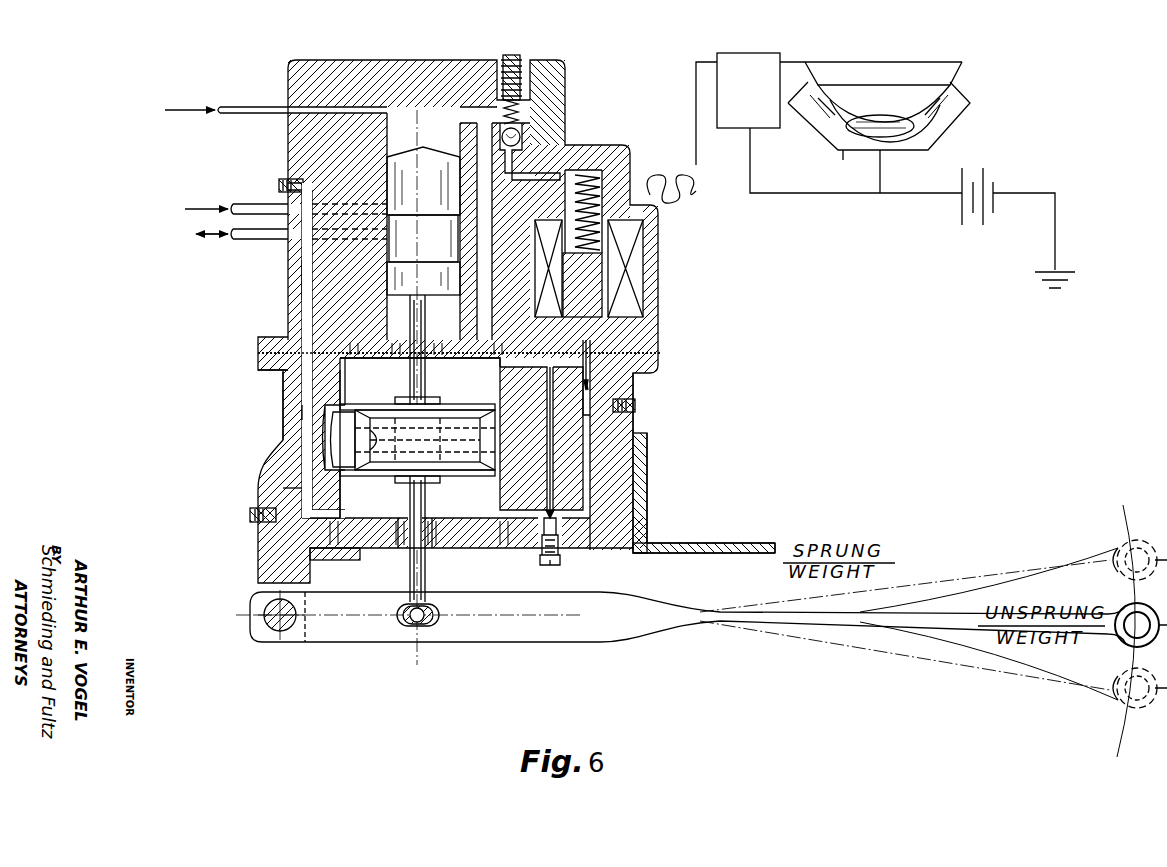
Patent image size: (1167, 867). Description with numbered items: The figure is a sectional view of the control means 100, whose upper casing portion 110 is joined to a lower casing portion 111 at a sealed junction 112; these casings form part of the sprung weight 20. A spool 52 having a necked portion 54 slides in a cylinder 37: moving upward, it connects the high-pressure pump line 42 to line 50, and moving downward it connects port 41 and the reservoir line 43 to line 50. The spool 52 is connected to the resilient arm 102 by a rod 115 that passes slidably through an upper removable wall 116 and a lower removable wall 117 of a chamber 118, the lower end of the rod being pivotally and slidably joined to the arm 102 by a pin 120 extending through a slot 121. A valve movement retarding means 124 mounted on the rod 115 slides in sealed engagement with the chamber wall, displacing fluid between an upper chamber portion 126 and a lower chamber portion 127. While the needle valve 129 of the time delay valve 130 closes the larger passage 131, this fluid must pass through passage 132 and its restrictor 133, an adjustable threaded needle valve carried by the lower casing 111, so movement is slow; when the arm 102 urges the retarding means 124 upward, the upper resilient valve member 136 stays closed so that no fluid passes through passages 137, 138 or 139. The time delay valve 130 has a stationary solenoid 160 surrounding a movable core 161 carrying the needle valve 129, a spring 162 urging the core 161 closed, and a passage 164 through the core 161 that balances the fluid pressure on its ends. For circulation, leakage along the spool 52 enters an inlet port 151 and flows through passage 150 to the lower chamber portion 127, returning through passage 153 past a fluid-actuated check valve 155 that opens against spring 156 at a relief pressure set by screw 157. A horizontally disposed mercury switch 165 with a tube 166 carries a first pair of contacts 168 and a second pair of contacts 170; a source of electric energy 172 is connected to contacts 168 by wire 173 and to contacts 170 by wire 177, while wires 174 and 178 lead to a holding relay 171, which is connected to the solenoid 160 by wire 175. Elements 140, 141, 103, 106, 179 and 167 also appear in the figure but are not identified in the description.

The control means 100 is at (285, 64).
The cylinder 37 is at (410, 125).
The line 43 is at (250, 110).
The line 42 is at (257, 205).
The line 50 is at (258, 236).
The inlet port 151 is at (302, 183).
The passage 150 is at (300, 282).
The screw 157 is at (522, 62).
The spring 156 is at (520, 112).
The check valve 155 is at (518, 133).
The return passage 153 is at (545, 172).
The spool 52 is at (423, 181).
The necked portion 54 is at (423, 255).
The port 41 is at (433, 350).
The time delay valve 130 is at (637, 227).
The solenoid 160 is at (636, 232).
The passage 164 is at (615, 298).
The core 161 is at (594, 268).
The spring 162 is at (625, 182).
The upper casing portion 110 is at (290, 328).
The sealed junction 112 is at (270, 352).
The lower casing portion 111 is at (270, 368).
The upper chamber portion 126 is at (285, 383).
The passage 138 is at (305, 410).
The chamber 140 is at (335, 440).
The valve movement retarding means 124 is at (290, 488).
The lower chamber portion 127 is at (262, 512).
The upper removable wall 116 is at (364, 378).
The upper resilient valve member 136 is at (440, 404).
The passage 137 is at (356, 418).
The passage 139 is at (400, 432).
The coupling plate 141 is at (445, 477).
The lower removable wall 117 is at (357, 548).
The chamber 118 is at (402, 512).
The rod 115 is at (426, 573).
The restrictor 133 is at (553, 535).
The needle valve 129 is at (600, 363).
The passage 131 is at (560, 440).
The passage 132 is at (620, 455).
The sprung weight 20 is at (698, 545).
The resilient arm 102 is at (480, 626).
The pivot pin 103 is at (292, 630).
The pin 120 is at (404, 622).
The slot 121 is at (432, 622).
The axle 106 is at (1127, 618).
The wire 175 is at (696, 110).
The holding relay 171 is at (748, 90).
The conductor 179 is at (765, 195).
The wire 178 is at (916, 148).
The wire 174 is at (823, 76).
The second pair of contacts 170 is at (948, 88).
The tube 166 is at (935, 117).
The mercury switch 165 is at (857, 100).
The mercury 167 is at (886, 129).
The first pair of contacts 168 is at (830, 112).
The wire 177 is at (916, 145).
The wire 173 is at (845, 150).
The source of electric energy 172 is at (965, 212).